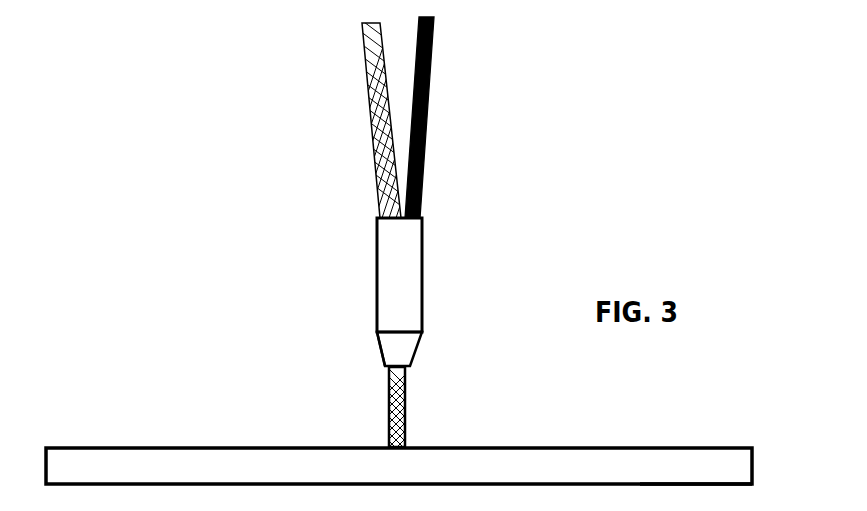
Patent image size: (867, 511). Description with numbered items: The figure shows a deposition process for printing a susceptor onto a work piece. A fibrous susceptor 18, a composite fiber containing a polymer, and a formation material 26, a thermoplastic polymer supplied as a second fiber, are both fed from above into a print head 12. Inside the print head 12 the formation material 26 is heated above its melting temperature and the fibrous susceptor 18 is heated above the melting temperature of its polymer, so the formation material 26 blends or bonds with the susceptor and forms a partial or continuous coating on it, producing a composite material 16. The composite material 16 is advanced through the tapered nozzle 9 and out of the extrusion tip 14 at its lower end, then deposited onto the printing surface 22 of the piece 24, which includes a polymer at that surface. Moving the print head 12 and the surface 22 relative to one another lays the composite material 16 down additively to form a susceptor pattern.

The nozzle taper 9 is at (378, 347).
The print head 12 is at (424, 283).
The extrusion tip 14 is at (409, 365).
The composite material 16 is at (388, 419).
The fibrous susceptor 18 is at (371, 131).
The surface 22 is at (222, 447).
The piece 24 is at (645, 466).
The formation material 26 is at (423, 132).